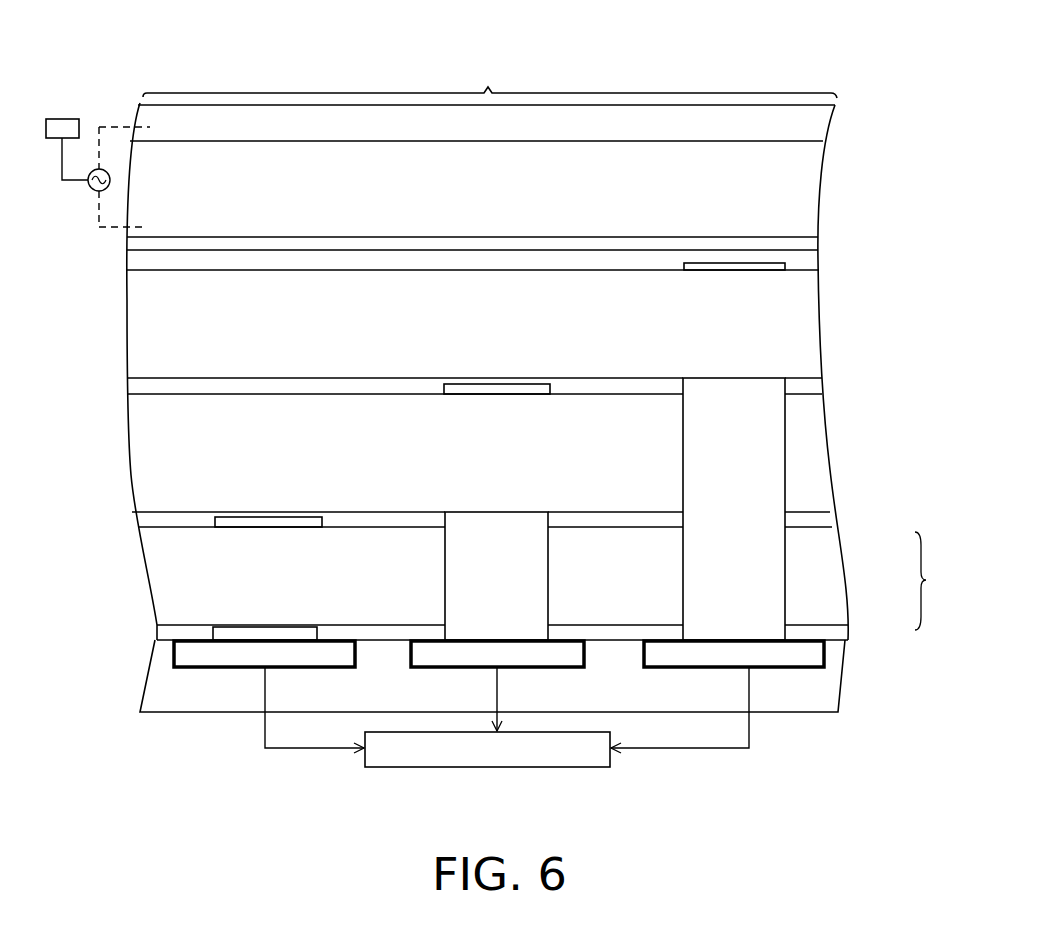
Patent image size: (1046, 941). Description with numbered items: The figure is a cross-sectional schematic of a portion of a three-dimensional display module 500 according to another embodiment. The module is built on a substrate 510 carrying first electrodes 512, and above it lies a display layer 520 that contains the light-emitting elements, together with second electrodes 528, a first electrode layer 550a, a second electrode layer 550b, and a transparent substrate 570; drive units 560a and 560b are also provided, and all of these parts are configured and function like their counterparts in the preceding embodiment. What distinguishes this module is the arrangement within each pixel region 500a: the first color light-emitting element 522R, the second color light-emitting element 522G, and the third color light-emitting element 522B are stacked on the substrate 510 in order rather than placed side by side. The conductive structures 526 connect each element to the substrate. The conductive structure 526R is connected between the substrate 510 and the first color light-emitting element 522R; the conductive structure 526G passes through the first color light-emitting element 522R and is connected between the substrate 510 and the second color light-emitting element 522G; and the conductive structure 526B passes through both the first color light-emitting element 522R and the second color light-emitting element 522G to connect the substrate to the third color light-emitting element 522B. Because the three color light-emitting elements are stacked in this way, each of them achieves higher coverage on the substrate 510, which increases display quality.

The three-dimensional display module 500 is at (876, 44).
The pixel region 500a is at (490, 75).
The substrate 510 is at (162, 683).
The first electrodes 512 is at (208, 668).
The display layer 520 is at (833, 463).
The first color light-emitting element 522R is at (218, 571).
The second color light-emitting element 522G is at (435, 460).
The third color light-emitting element 522B is at (142, 306).
The conductive structures 526 is at (944, 581).
The conductive structure 526R is at (285, 632).
The conductive structure 526G is at (522, 568).
The conductive structure 526B is at (758, 542).
The second electrodes 528 is at (790, 258).
The first electrode layer 550a is at (815, 246).
The second electrode layer 550b is at (815, 134).
The drive unit 560a is at (612, 758).
The drive unit 560b is at (63, 118).
The transparent substrate 570 is at (152, 260).